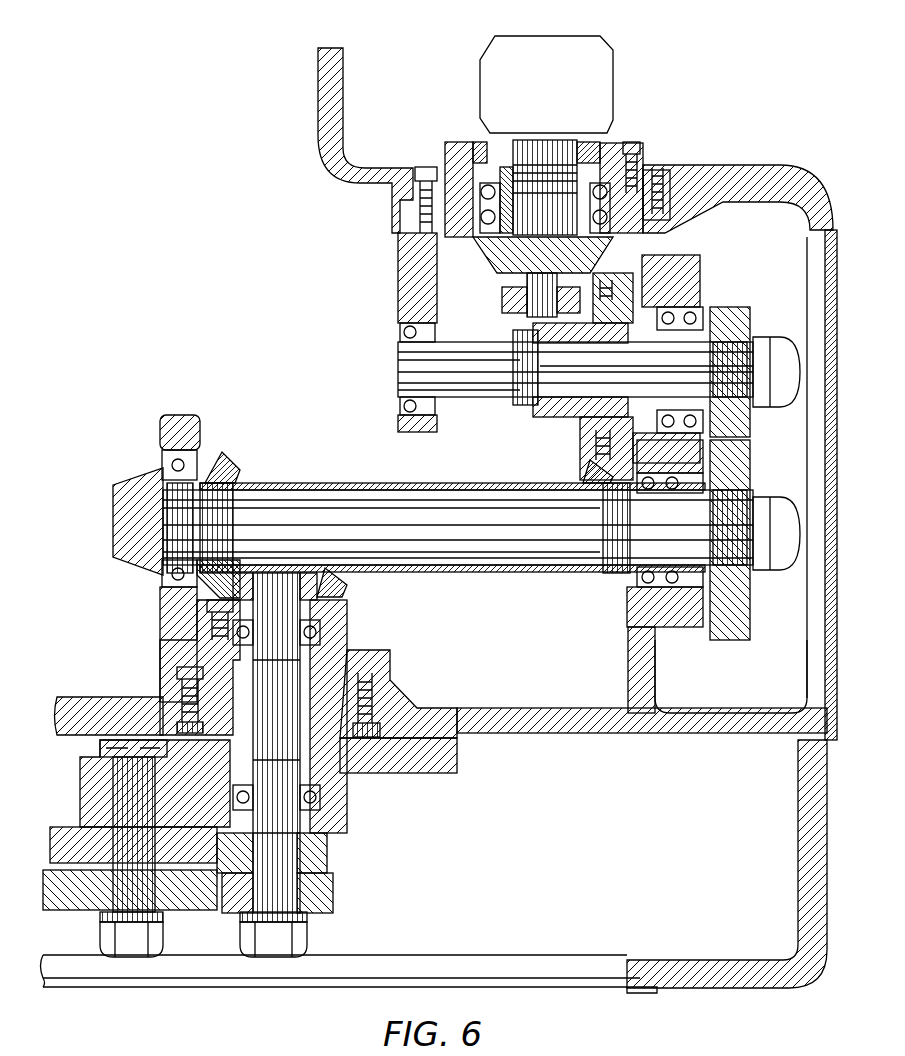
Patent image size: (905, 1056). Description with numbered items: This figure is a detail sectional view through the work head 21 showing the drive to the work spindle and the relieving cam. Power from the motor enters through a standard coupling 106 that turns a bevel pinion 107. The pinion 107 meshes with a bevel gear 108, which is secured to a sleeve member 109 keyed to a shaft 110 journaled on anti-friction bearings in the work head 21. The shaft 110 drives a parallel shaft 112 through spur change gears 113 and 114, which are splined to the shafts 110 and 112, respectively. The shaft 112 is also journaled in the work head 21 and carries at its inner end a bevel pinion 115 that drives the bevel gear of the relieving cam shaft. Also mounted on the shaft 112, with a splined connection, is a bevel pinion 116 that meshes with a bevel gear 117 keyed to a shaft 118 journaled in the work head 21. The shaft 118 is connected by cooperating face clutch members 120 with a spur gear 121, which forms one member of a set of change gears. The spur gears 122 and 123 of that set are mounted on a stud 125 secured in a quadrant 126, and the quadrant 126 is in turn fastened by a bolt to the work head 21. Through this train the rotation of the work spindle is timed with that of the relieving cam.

The work head 21 is at (570, 730).
The standard coupling 106 is at (606, 80).
The bevel pinion 107 is at (488, 270).
The bevel gear 108 is at (592, 467).
The sleeve member 109 is at (600, 420).
The shaft 110 is at (488, 383).
The parallel shaft 112 is at (457, 540).
The spur change gear 113 is at (752, 332).
The spur change gear 114 is at (738, 598).
The bevel pinion 115 is at (138, 555).
The bevel pinion 116 is at (228, 458).
The bevel gear 117 is at (342, 588).
The shaft 118 is at (360, 795).
The face clutch members 120 is at (328, 850).
The spur gear 121 is at (333, 892).
The spur gear 122 is at (182, 903).
The spur gear 123 is at (73, 825).
The stud 125 is at (100, 897).
The quadrant 126 is at (425, 775).